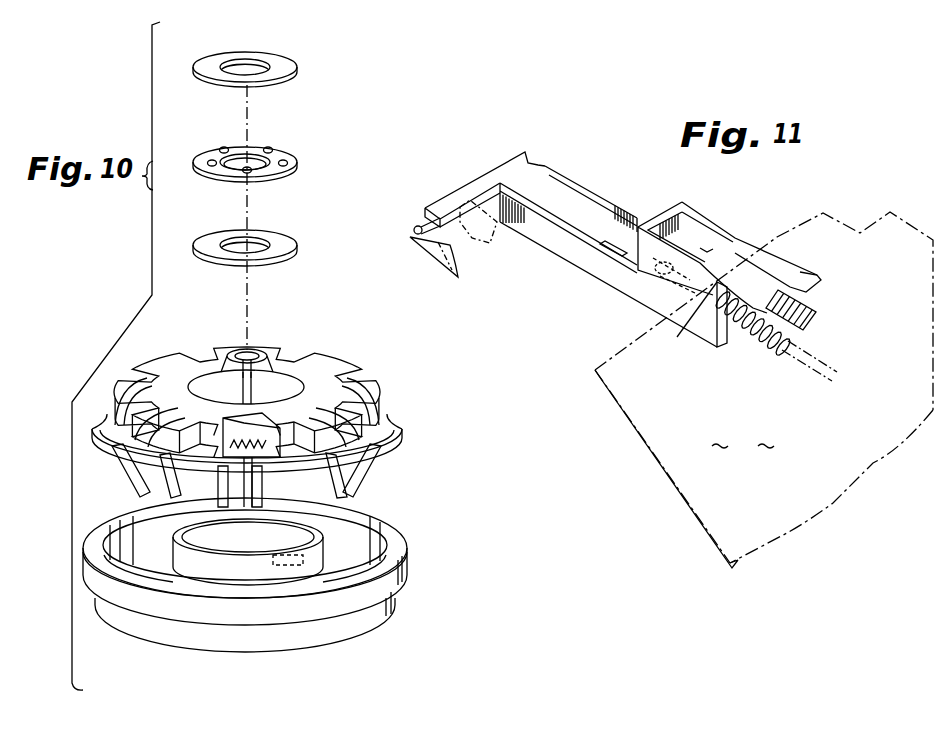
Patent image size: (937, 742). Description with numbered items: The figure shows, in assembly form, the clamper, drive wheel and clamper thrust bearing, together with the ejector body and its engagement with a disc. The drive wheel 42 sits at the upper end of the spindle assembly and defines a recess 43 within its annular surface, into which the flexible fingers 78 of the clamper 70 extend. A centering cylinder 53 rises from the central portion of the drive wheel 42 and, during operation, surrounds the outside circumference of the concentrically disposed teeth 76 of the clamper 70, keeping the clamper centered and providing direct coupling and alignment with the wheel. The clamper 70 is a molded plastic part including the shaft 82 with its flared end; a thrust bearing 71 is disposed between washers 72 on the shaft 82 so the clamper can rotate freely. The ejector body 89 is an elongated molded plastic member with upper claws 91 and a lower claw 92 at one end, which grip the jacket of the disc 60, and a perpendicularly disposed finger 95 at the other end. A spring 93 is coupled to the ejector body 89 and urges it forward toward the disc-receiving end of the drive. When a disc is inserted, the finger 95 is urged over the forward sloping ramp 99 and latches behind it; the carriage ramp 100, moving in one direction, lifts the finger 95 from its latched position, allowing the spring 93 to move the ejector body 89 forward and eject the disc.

In FIG. 10, the drive wheel 42 is at (276, 573).
In FIG. 10, the recess 43 is at (360, 548).
In FIG. 10, the centering cylinder 53 is at (177, 552).
In FIG. 11, the disc 60 is at (764, 390).
In FIG. 10, the clamper 70 is at (242, 402).
In FIG. 10, the thrust bearing 71 is at (222, 147).
In FIG. 10, the washers 72 is at (290, 53).
In FIG. 10, the teeth 76 is at (221, 449).
In FIG. 10, the flexible fingers 78 is at (143, 490).
In FIG. 10, the shaft 82 is at (256, 350).
In FIG. 11, the ejector body 89 is at (615, 212).
In FIG. 11, the upper claws 91 is at (800, 270).
In FIG. 11, the lower claw 92 is at (812, 314).
In FIG. 11, the spring 93 is at (763, 343).
In FIG. 11, the finger 95 is at (481, 176).
In FIG. 11, the ramp 99 is at (497, 232).
In FIG. 11, the ramp 100 is at (434, 252).